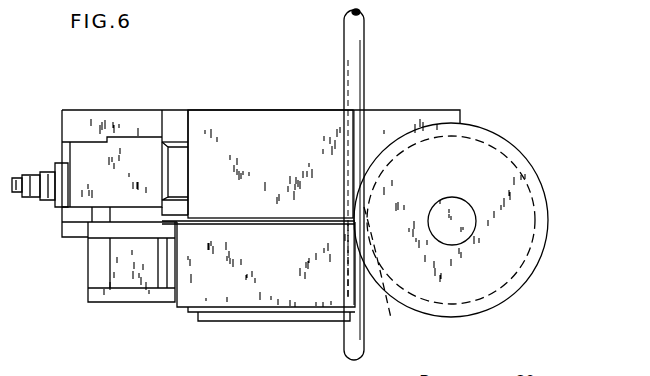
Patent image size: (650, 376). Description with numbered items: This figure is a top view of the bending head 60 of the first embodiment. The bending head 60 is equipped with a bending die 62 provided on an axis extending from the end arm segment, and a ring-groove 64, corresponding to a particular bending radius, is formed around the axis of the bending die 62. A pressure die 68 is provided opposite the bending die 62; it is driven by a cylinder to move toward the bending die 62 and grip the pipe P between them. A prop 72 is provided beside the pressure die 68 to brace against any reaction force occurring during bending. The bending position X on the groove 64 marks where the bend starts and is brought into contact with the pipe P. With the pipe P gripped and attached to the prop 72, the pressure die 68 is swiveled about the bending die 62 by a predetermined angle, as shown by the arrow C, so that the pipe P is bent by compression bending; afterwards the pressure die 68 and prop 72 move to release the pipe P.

The bending head 60 is at (457, 188).
The bending die 62 is at (488, 280).
The ring-groove 64 is at (494, 118).
The pressure die 68 is at (195, 285).
The prop 72 is at (234, 137).
The pipe P is at (365, 45).
The arrow C is at (263, 272).
The bending position X is at (384, 271).